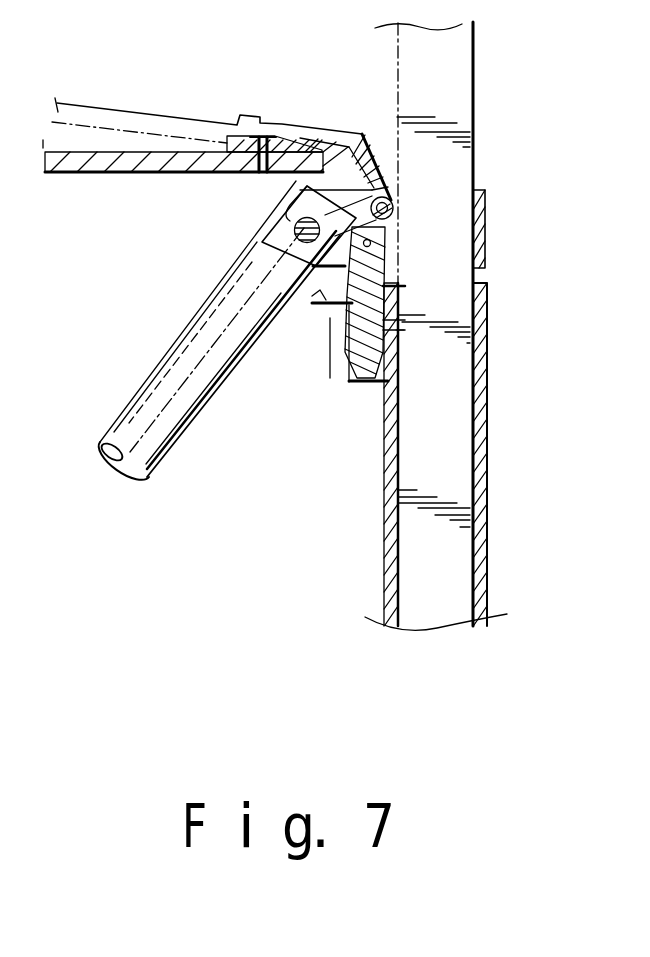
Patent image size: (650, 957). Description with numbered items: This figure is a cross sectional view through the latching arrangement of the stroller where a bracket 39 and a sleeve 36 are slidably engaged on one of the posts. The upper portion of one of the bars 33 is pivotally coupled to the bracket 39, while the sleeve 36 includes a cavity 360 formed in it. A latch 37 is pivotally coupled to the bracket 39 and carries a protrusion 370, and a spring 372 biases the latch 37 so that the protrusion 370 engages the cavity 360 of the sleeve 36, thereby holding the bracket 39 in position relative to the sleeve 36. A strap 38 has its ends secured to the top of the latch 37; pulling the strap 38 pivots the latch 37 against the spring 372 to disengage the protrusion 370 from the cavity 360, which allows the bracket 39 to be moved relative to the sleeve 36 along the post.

The bar 33 is at (105, 338).
The sleeve 36 is at (487, 401).
The latch 37 is at (346, 310).
The strap 38 is at (125, 153).
The bracket 39 is at (483, 197).
The cavity 360 is at (370, 355).
The protrusion 370 is at (397, 333).
The spring 372 is at (317, 265).